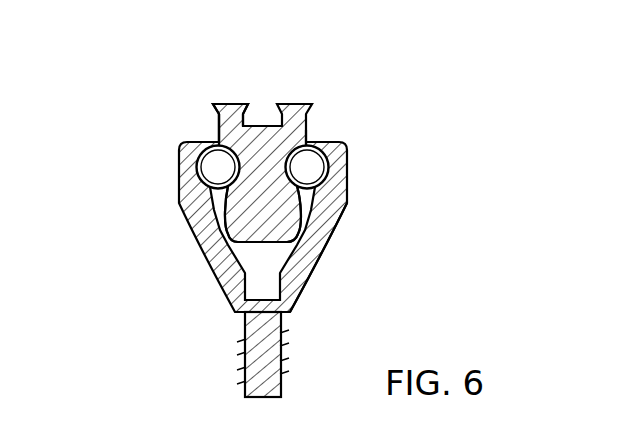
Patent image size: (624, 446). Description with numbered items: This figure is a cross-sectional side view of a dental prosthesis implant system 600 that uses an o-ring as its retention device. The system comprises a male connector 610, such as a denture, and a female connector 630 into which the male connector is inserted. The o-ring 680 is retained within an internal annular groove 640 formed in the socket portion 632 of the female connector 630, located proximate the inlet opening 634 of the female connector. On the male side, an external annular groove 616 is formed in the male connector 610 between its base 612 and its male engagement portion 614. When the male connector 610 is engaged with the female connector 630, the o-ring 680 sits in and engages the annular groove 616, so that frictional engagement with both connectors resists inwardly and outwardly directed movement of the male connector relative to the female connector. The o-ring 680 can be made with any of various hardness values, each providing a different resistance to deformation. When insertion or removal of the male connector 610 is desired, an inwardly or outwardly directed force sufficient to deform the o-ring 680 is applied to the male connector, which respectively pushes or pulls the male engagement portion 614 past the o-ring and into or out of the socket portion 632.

The bone screw assembly 600 is at (371, 146).
The male connector 610 is at (313, 100).
The base 612 is at (218, 103).
The male engagement portion 614 is at (246, 215).
The external annular groove 616 is at (218, 125).
The female connector 630 is at (178, 214).
The socket portion 632 is at (178, 170).
The inlet opening 634 is at (309, 136).
The internal annular groove 640 is at (343, 208).
The o-ring 680 is at (317, 165).